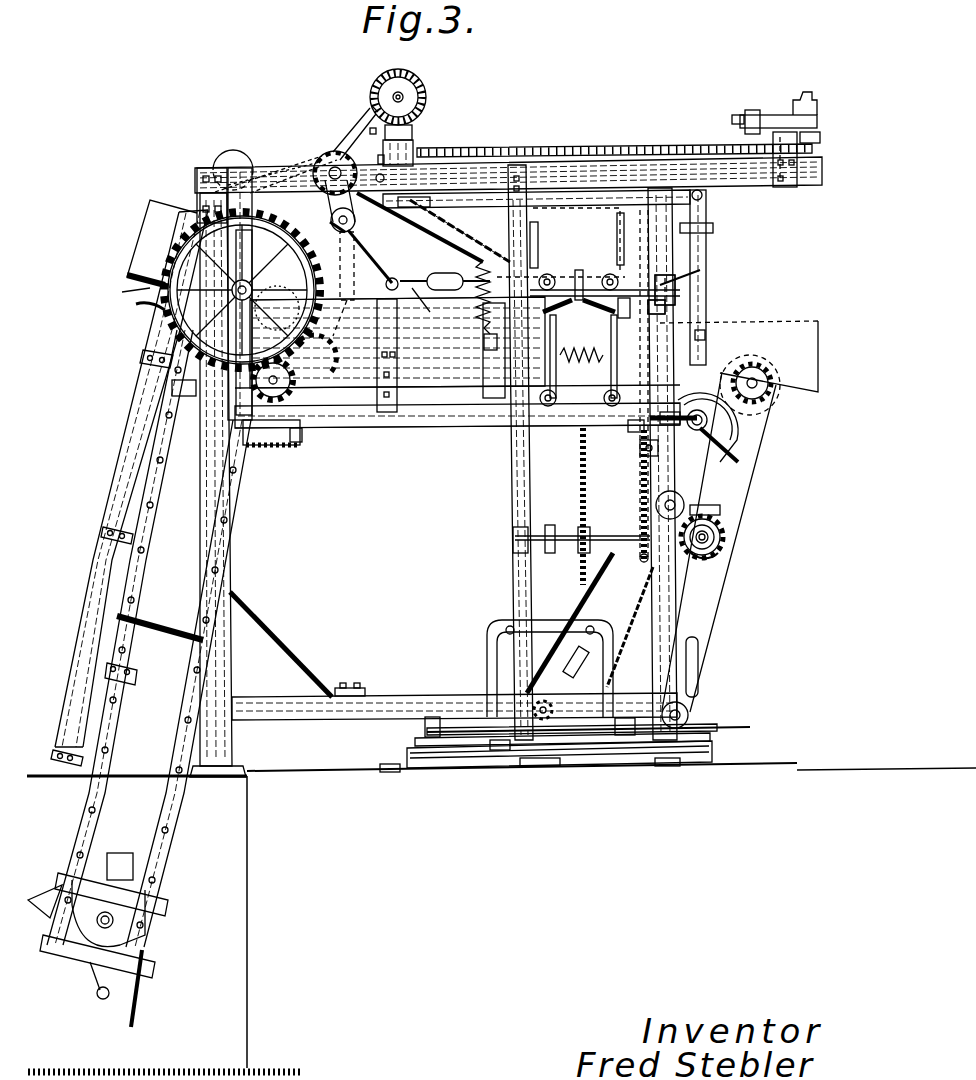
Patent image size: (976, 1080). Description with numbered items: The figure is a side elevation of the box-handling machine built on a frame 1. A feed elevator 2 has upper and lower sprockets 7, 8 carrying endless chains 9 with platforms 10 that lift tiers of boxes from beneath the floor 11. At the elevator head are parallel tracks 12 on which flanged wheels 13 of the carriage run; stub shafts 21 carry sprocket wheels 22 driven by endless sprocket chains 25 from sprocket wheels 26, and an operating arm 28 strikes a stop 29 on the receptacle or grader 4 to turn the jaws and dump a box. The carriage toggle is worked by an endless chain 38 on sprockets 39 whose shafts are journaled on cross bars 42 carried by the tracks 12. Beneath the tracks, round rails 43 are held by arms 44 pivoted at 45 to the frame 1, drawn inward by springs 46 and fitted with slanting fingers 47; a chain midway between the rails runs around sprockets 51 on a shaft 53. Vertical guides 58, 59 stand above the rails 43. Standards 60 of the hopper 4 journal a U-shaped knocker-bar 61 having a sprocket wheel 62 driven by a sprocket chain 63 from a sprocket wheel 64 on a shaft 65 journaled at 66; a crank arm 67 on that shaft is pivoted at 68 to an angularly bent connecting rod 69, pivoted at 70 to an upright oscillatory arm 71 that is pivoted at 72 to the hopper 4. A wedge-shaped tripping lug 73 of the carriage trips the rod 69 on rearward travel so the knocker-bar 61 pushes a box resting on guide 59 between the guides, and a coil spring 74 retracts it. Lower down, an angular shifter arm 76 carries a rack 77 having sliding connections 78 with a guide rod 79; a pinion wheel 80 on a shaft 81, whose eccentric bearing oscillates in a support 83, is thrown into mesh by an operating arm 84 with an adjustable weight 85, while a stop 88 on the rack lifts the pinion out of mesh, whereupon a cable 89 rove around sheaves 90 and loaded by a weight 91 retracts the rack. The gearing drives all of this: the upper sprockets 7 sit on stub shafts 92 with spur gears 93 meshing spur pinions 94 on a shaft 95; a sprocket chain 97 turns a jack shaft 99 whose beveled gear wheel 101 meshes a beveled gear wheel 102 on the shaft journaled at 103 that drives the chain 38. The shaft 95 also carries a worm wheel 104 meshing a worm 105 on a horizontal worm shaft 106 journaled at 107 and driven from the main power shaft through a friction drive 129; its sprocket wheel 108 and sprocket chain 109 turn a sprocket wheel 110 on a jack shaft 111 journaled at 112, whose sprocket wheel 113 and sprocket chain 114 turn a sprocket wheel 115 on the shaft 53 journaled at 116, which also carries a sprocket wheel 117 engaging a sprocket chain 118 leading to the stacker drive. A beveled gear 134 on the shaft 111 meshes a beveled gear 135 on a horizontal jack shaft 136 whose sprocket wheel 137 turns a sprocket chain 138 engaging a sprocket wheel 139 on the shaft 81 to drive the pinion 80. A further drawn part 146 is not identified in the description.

The frame 1 is at (242, 582).
The feed elevator 2 is at (80, 586).
The grader 4 is at (780, 360).
The upper sprockets 7 is at (266, 288).
The lower sprockets 8 is at (130, 920).
The endless chains 9 is at (85, 800).
The platforms 10 is at (122, 292).
The floor 11 is at (39, 762).
The parallel tracks 12 is at (262, 165).
The flanged wheels 13 is at (233, 152).
The stub shafts 21 is at (145, 260).
The sprocket wheels 22 is at (170, 232).
The endless sprocket chains 25 is at (318, 160).
The sprocket wheels 26 is at (336, 150).
The operating arm 28 is at (415, 296).
The stop 29 is at (455, 330).
The endless chain 38 is at (502, 148).
The sprockets 39 is at (371, 171).
The cross bars 42 is at (373, 123).
The rails 43 is at (552, 275).
The arms 44 is at (540, 400).
The pivots 45 is at (548, 408).
The springs 46 is at (575, 370).
The fingers 47 is at (580, 349).
The sprockets 51 is at (585, 280).
The shaft 53 is at (629, 309).
The vertical guide 58 is at (622, 240).
The vertical guide 59 is at (538, 248).
The standards 60 is at (484, 343).
The knocker-bar 61 is at (440, 280).
The sprocket wheel 62 is at (482, 262).
The sprocket chain 63 is at (425, 200).
The sprocket wheel 64 is at (331, 221).
The shaft 65 is at (329, 236).
The journal 66 is at (380, 156).
The operating crank arm 67 is at (372, 258).
The pivot 68 is at (383, 289).
The connecting rod 69 is at (472, 232).
The pivot 70 is at (704, 194).
The oscillatory arm 71 is at (706, 245).
The pivot 72 is at (705, 333).
The tripping lug 73 is at (412, 207).
The coil spring 74 is at (453, 276).
The shifter arm 76 is at (750, 727).
The rack 77 is at (600, 742).
The sliding connections 78 is at (530, 755).
The guide rod 79 is at (470, 757).
The pinion wheel 80 is at (525, 712).
The shaft 81 is at (552, 708).
The support 83 is at (540, 766).
The operating arm 84 is at (587, 596).
The weight 85 is at (582, 652).
The stop 88 is at (625, 735).
The cable 89 is at (700, 605).
The sheaves 90 is at (684, 503).
The weight 91 is at (698, 662).
The stub shafts 92 is at (141, 299).
The spur gears 93 is at (165, 312).
The spur pinions 94 is at (236, 398).
The shaft 95 is at (143, 358).
The sprocket chain 97 is at (364, 104).
The jack shaft 99 is at (405, 98).
The beveled gear wheel 101 is at (428, 85).
The beveled gear wheel 102 is at (412, 130).
The journal 103 is at (413, 140).
The worm wheel 104 is at (302, 395).
The worm 105 is at (278, 448).
The worm shaft 106 is at (450, 430).
The journal 107 is at (302, 442).
The sprocket wheel 108 is at (620, 440).
The sprocket chain 109 is at (580, 480).
The sprocket wheel 110 is at (568, 536).
The jack shaft 111 is at (607, 536).
The journal 112 is at (513, 540).
The sprocket wheel 113 is at (642, 552).
The sprocket chain 114 is at (644, 480).
The sprocket wheel 115 is at (642, 385).
The journal 116 is at (676, 288).
The sprocket wheel 117 is at (700, 270).
The sprocket chain 118 is at (665, 308).
The friction drive 129 is at (754, 440).
The beveled gear 134 is at (718, 513).
The beveled gear 135 is at (720, 540).
The horizontal jack shaft 136 is at (726, 532).
The sprocket wheel 137 is at (715, 558).
The sprocket chain 138 is at (645, 655).
The sprocket wheel 139 is at (494, 778).
The link 146 is at (628, 449).